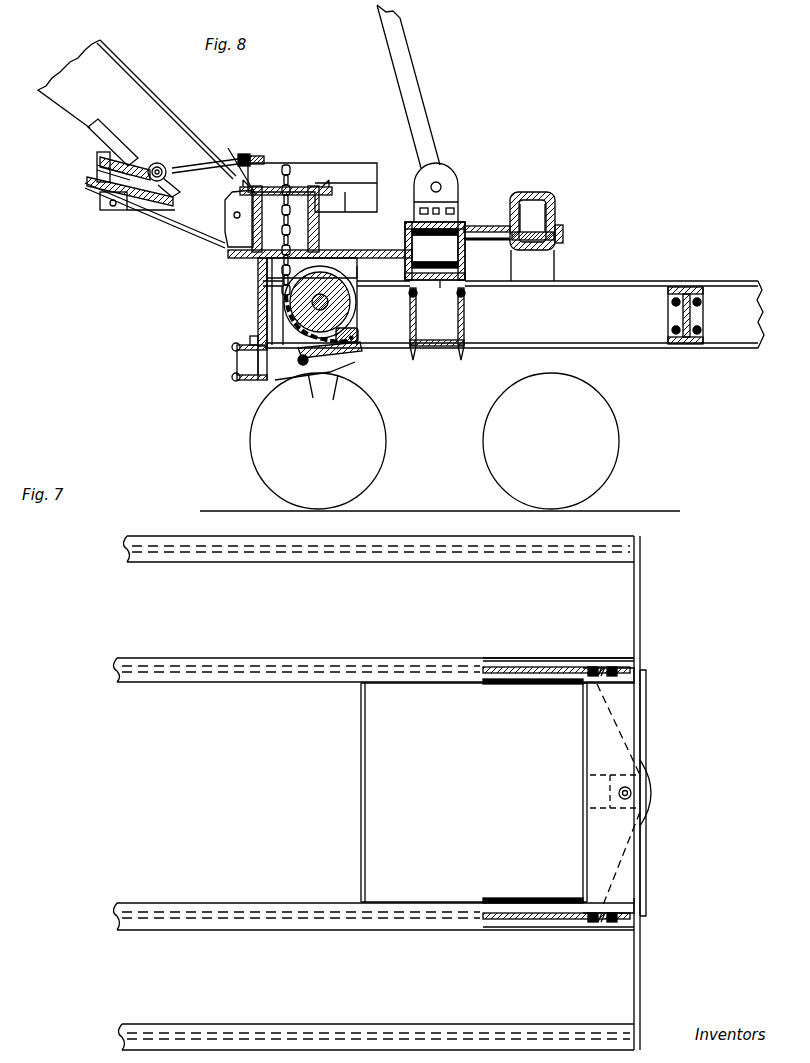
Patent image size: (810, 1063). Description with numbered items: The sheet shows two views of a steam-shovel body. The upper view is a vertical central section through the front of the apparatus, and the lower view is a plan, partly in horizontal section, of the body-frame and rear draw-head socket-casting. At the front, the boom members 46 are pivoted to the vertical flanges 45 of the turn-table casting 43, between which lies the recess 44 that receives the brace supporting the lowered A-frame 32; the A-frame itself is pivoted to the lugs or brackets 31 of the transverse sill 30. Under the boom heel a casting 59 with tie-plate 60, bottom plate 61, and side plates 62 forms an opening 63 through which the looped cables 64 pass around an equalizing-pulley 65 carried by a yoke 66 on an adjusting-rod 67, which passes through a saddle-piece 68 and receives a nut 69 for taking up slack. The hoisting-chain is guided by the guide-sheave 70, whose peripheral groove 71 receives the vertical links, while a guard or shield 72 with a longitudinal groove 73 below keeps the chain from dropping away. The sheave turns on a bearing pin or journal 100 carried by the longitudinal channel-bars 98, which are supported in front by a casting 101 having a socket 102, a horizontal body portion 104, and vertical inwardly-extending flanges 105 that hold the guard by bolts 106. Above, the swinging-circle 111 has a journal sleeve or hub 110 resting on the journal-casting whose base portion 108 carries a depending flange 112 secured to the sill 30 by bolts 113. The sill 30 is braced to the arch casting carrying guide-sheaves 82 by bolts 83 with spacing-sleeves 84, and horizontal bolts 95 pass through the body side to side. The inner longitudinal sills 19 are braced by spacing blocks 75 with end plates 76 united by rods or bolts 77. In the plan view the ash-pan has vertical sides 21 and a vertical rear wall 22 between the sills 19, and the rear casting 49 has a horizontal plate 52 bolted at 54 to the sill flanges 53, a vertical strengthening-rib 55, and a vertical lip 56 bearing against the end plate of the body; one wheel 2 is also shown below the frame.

In FIG. 8, the wheel 2 is at (468, 490).
In FIG. 7, the inner longitudinal sills 19 is at (518, 662).
In FIG. 7, the vertical sides 21 is at (530, 686).
In FIG. 7, the vertical rear wall 22 is at (583, 774).
In FIG. 8, the transverse sill 30 is at (466, 248).
In FIG. 8, the lugs or brackets 31 is at (450, 182).
In FIG. 8, the A-frame 32 is at (415, 92).
In FIG. 8, the turn-table casting 43 is at (320, 236).
In FIG. 8, the recess 44 is at (220, 238).
In FIG. 8, the vertical flanges 45 is at (232, 212).
In FIG. 8, the boom members 46 is at (145, 82).
In FIG. 7, the casting 49 is at (640, 888).
In FIG. 7, the horizontal plate 52 is at (605, 725).
In FIG. 7, the flanges 53 is at (560, 665).
In FIG. 7, the bolts 54 is at (612, 667).
In FIG. 7, the vertical strengthening-rib 55 is at (590, 765).
In FIG. 7, the vertical rib or lip 56 is at (646, 696).
In FIG. 8, the casting 59 is at (97, 158).
In FIG. 8, the tie-plate 60 is at (118, 138).
In FIG. 8, the bottom plate 61 is at (98, 195).
In FIG. 8, the side plates 62 is at (97, 168).
In FIG. 8, the opening 63 is at (125, 157).
In FIG. 8, the cables 64 is at (158, 163).
In FIG. 8, the equalizing-pulley 65 is at (165, 170).
In FIG. 8, the yoke 66 is at (172, 186).
In FIG. 8, the adjusting-rod 67 is at (203, 162).
In FIG. 8, the saddle-piece 68 is at (245, 154).
In FIG. 8, the nut 69 is at (258, 156).
In FIG. 8, the guide-sheave 70 is at (352, 306).
In FIG. 8, the peripheral groove 71 is at (340, 275).
In FIG. 8, the guard or shield 72 is at (350, 358).
In FIG. 8, the longitudinal groove 73 is at (350, 342).
In FIG. 8, the spacing blocks or castings 75 is at (690, 318).
In FIG. 8, the end plates 76 is at (668, 318).
In FIG. 8, the rods or bolts 77 is at (672, 302).
In FIG. 8, the guide-sheaves 82 is at (556, 204).
In FIG. 8, the bolts 83 is at (538, 226).
In FIG. 8, the spacing-sleeves 84 is at (482, 230).
In FIG. 8, the horizontal bolts 95 is at (410, 298).
In FIG. 8, the longitudinal channel-bars 98 is at (397, 335).
In FIG. 8, the bearing pin or journal 100 is at (326, 305).
In FIG. 8, the casting 101 is at (255, 344).
In FIG. 8, the socket 102 is at (237, 358).
In FIG. 8, the horizontal body portion 104 is at (285, 350).
In FIG. 8, the vertical inwardly-extending flanges 105 is at (278, 380).
In FIG. 8, the bolts 106 is at (324, 394).
In FIG. 8, the base portion 108 is at (360, 258).
In FIG. 8, the journal sleeve or hub 110 is at (330, 195).
In FIG. 8, the swinging-circle 111 is at (330, 163).
In FIG. 8, the depending flange 112 is at (435, 251).
In FIG. 8, the bolts 113 is at (441, 290).